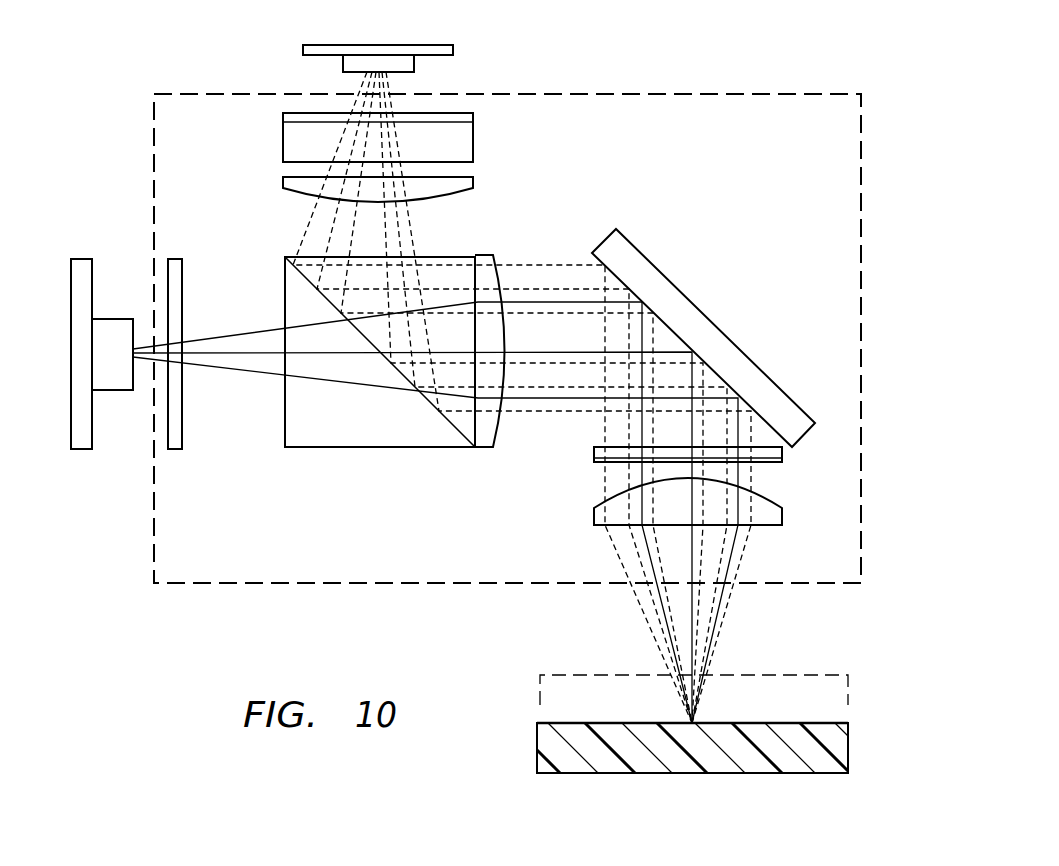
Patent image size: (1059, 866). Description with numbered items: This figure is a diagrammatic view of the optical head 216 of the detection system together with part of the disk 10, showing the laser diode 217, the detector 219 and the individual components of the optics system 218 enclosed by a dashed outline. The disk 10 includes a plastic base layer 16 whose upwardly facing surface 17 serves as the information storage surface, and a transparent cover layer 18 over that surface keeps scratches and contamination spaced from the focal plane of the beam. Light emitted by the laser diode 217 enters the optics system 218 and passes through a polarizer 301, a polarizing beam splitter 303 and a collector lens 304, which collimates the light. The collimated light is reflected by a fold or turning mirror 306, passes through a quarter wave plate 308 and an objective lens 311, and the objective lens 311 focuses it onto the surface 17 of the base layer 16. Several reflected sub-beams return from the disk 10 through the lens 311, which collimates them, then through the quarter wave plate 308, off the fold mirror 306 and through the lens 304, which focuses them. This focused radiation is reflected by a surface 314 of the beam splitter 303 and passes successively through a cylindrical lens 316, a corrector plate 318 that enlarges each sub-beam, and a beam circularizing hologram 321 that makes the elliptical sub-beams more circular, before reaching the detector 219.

The disk 10 is at (670, 708).
The base layer 16 is at (757, 768).
The surface 17 is at (605, 722).
The cover layer 18 is at (540, 700).
The optical head 216 is at (173, 630).
The laser diode 217 is at (110, 325).
The optics system 218 is at (779, 92).
The detector 219 is at (343, 64).
The polarizer 301 is at (180, 452).
The polarizing beam splitter 303 is at (310, 450).
The collector lens 304 is at (497, 430).
The fold mirror 306 is at (714, 328).
The quarter wave plate 308 is at (785, 455).
The objective lens 311 is at (786, 517).
The surface 314 is at (453, 420).
The cylindrical lens 316 is at (285, 183).
The corrector plate 318 is at (477, 140).
The beam circularizing hologram 321 is at (285, 116).